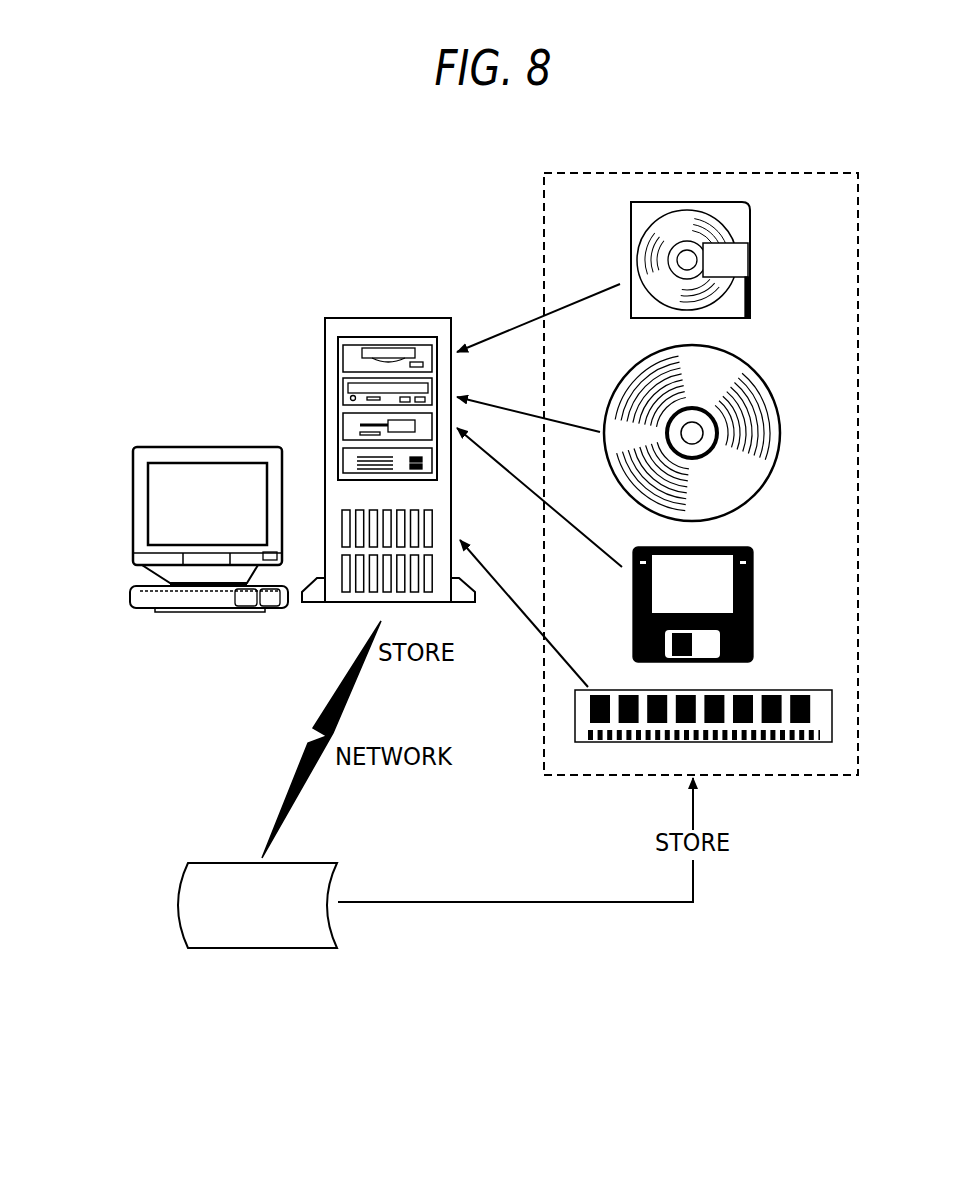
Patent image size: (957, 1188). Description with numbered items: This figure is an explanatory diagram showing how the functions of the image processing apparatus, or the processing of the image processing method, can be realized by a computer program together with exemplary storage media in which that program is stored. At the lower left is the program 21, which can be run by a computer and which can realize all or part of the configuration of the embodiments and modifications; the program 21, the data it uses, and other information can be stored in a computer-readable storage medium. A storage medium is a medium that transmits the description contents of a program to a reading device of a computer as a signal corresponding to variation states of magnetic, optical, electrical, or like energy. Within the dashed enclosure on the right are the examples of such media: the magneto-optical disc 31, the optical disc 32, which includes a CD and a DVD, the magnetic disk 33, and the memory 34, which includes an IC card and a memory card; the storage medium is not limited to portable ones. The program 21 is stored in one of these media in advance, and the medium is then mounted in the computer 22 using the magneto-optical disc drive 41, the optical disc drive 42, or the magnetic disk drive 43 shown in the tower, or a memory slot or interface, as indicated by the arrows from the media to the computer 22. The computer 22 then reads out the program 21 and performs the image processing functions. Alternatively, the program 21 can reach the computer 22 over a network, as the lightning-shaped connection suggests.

The program 21 is at (260, 948).
The computer 22 is at (385, 318).
The magneto-optical disc 31 is at (750, 222).
The optical disc 32 is at (782, 433).
The magnetic disk 33 is at (753, 578).
The memory 34 is at (800, 690).
The magneto-optical disc drive 41 is at (343, 359).
The optical disc drive 42 is at (343, 393).
The magnetic disk drive 43 is at (343, 426).